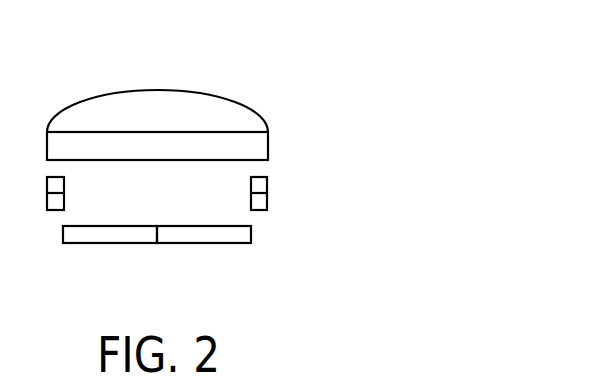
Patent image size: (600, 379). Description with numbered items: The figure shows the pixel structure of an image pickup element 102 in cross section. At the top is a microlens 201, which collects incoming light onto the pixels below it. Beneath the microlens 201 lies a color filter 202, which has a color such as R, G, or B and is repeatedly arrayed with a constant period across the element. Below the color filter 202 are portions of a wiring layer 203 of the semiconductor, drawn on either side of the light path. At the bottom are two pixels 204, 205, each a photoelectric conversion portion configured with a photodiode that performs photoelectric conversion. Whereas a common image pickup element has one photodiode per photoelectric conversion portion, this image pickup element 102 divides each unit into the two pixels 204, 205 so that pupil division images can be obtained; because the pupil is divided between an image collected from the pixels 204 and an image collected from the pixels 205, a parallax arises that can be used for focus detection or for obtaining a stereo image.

The image pickup element 102 is at (329, 59).
The microlens 201 is at (222, 100).
The color filter 202 is at (268, 144).
The wiring layer 203 is at (267, 197).
The pixel 204 is at (207, 244).
The pixel 205 is at (122, 244).